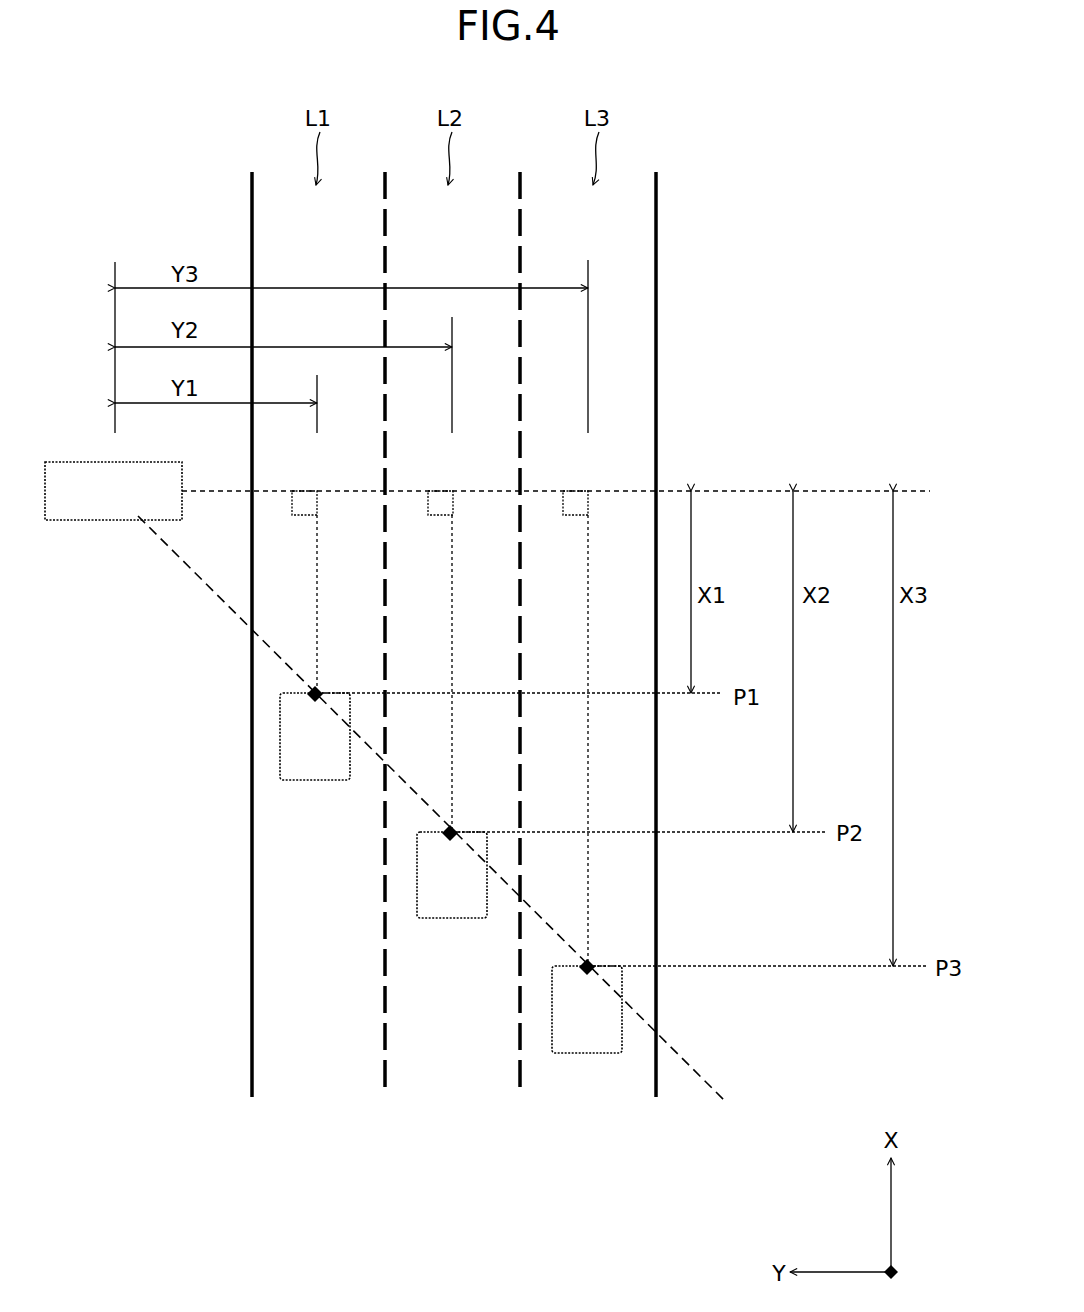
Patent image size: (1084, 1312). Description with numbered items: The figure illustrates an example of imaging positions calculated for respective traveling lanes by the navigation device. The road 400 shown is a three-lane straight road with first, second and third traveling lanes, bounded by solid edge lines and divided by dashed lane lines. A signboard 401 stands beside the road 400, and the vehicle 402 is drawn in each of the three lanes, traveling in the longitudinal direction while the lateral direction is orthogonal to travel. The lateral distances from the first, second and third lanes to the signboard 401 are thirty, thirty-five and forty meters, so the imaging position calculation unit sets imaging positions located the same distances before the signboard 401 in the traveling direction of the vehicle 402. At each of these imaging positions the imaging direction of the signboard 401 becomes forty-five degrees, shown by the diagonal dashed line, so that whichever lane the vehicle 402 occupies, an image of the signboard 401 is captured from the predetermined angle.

The road 400 is at (658, 215).
The signboard 401 is at (150, 462).
The vehicle 402 is at (315, 780).